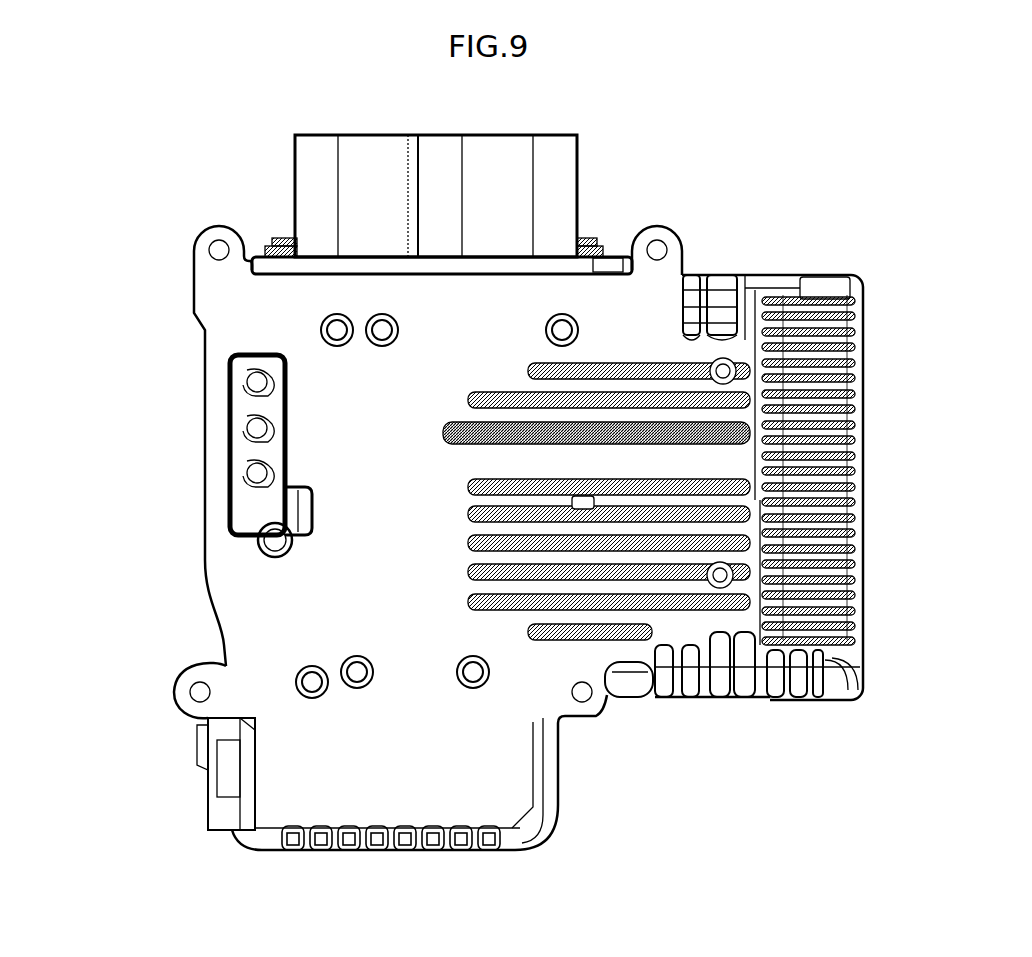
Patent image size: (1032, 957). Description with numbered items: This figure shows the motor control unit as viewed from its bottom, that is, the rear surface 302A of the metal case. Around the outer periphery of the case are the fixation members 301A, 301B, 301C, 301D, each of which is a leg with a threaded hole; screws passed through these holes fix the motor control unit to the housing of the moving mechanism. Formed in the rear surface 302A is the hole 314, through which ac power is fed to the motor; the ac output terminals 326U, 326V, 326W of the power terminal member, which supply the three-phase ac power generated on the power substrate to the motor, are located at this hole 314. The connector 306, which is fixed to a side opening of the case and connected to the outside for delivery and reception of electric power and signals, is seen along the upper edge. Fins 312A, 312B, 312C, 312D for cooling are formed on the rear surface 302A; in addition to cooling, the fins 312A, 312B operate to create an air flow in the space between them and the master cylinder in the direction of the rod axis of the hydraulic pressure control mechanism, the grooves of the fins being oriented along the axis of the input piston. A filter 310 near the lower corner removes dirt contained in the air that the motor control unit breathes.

The connector 306 is at (295, 150).
The fixation member 301A is at (219, 240).
The fixation member 301B is at (188, 692).
The fixation member 301C is at (657, 247).
The fixation member 301D is at (584, 698).
The fin 312A is at (445, 432).
The fin 312B is at (890, 340).
The fin 312C is at (708, 273).
The fin 312D is at (370, 853).
The ac output terminal 326U is at (245, 382).
The ac output terminal 326V is at (245, 428).
The ac output terminal 326W is at (245, 473).
The hole 314 is at (243, 514).
The rear surface 302A is at (250, 628).
The filter 310 is at (212, 768).